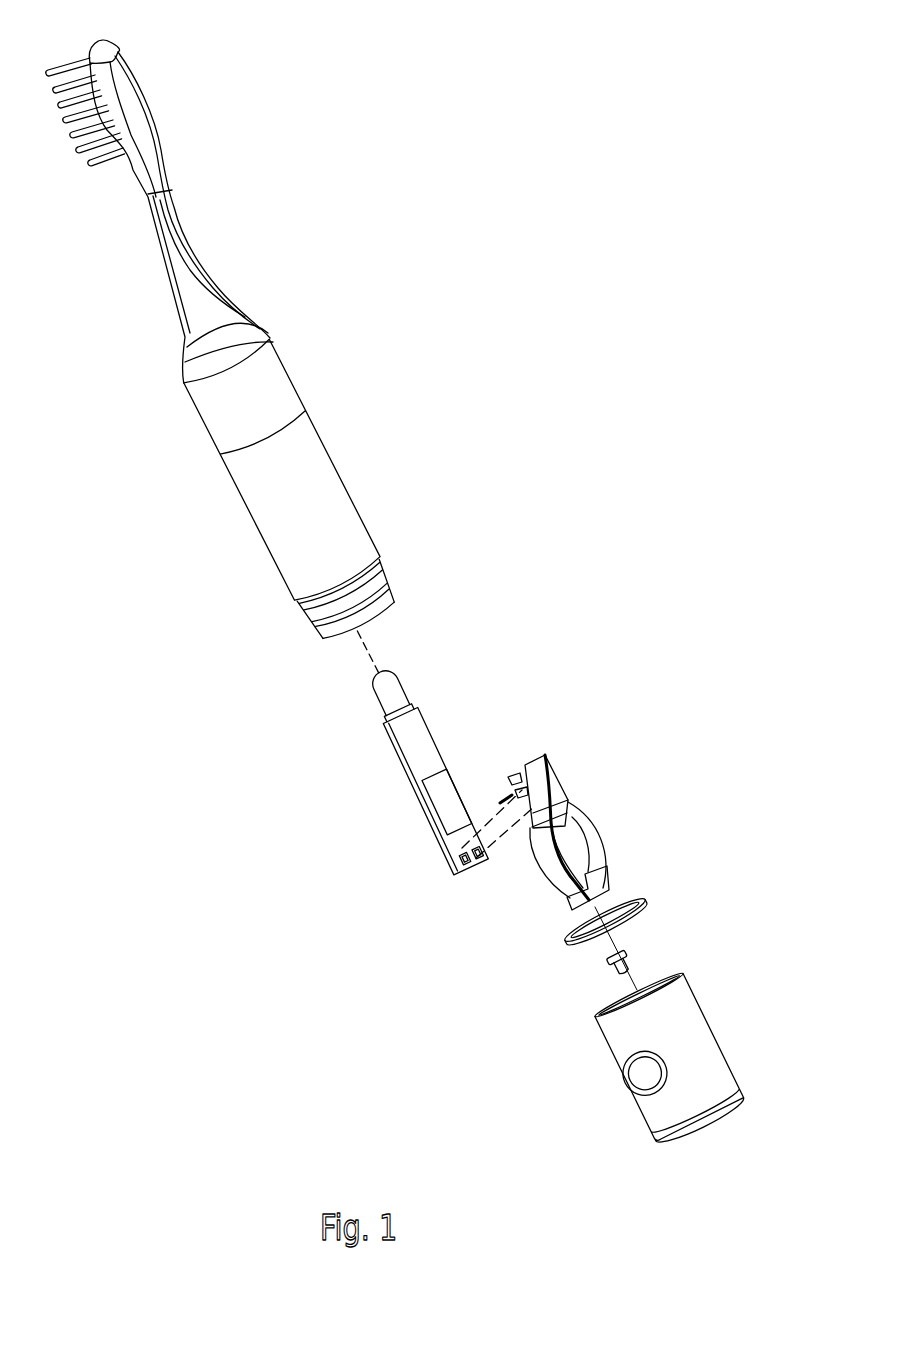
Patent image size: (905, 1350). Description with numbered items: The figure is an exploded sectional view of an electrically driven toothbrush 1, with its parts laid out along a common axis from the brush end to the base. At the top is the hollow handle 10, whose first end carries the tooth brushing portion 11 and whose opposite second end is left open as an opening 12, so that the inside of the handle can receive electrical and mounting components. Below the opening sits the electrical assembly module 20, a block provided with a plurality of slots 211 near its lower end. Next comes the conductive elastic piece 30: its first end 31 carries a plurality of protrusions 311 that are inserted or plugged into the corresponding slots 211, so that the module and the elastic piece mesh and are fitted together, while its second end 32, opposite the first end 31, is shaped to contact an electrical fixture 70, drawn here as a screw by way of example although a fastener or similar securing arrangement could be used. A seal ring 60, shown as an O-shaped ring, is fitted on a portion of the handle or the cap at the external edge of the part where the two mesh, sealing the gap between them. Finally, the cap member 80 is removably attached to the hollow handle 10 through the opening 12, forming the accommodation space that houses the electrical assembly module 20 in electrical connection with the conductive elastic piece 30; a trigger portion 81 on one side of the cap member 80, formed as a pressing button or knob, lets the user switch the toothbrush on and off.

The electrically driven toothbrush 1 is at (468, 283).
The hollow handle 10 is at (283, 472).
The tooth brushing portion 11 is at (137, 93).
The opening 12 is at (362, 627).
The electrical assembly module 20 is at (413, 763).
The slots 211 is at (452, 873).
The conductive elastic piece 30 is at (700, 780).
The first end 31 is at (546, 756).
The protrusions 311 is at (520, 770).
The second end 32 is at (592, 833).
The seal ring 60 is at (560, 943).
The electrical fixture 70 is at (630, 958).
The cap member 80 is at (683, 1017).
The trigger portion 81 is at (638, 1072).